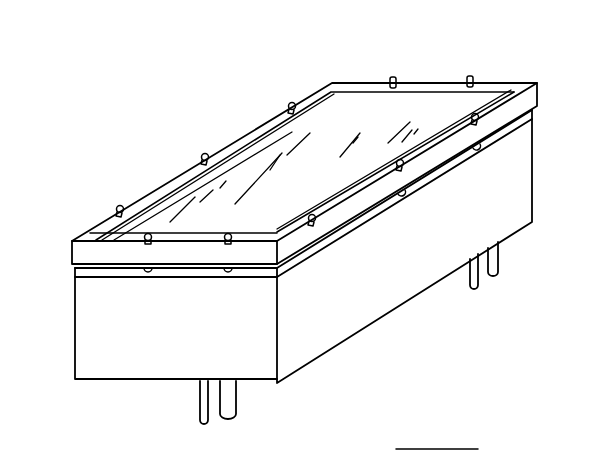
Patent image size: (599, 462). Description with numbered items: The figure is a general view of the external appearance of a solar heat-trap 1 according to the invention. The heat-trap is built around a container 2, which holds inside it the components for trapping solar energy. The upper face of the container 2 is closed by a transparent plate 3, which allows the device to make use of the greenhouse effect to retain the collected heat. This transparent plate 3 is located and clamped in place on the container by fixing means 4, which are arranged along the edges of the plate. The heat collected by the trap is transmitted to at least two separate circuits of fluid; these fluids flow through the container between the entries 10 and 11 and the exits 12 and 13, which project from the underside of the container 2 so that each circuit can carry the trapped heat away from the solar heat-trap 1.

The solar heat-trap 1 is at (95, 205).
The container 2 is at (333, 328).
The transparent plate 3 is at (268, 157).
The fixing means 4 is at (494, 75).
The entry 10 is at (232, 397).
The entry 11 is at (202, 402).
The exit 12 is at (492, 262).
The exit 13 is at (470, 270).